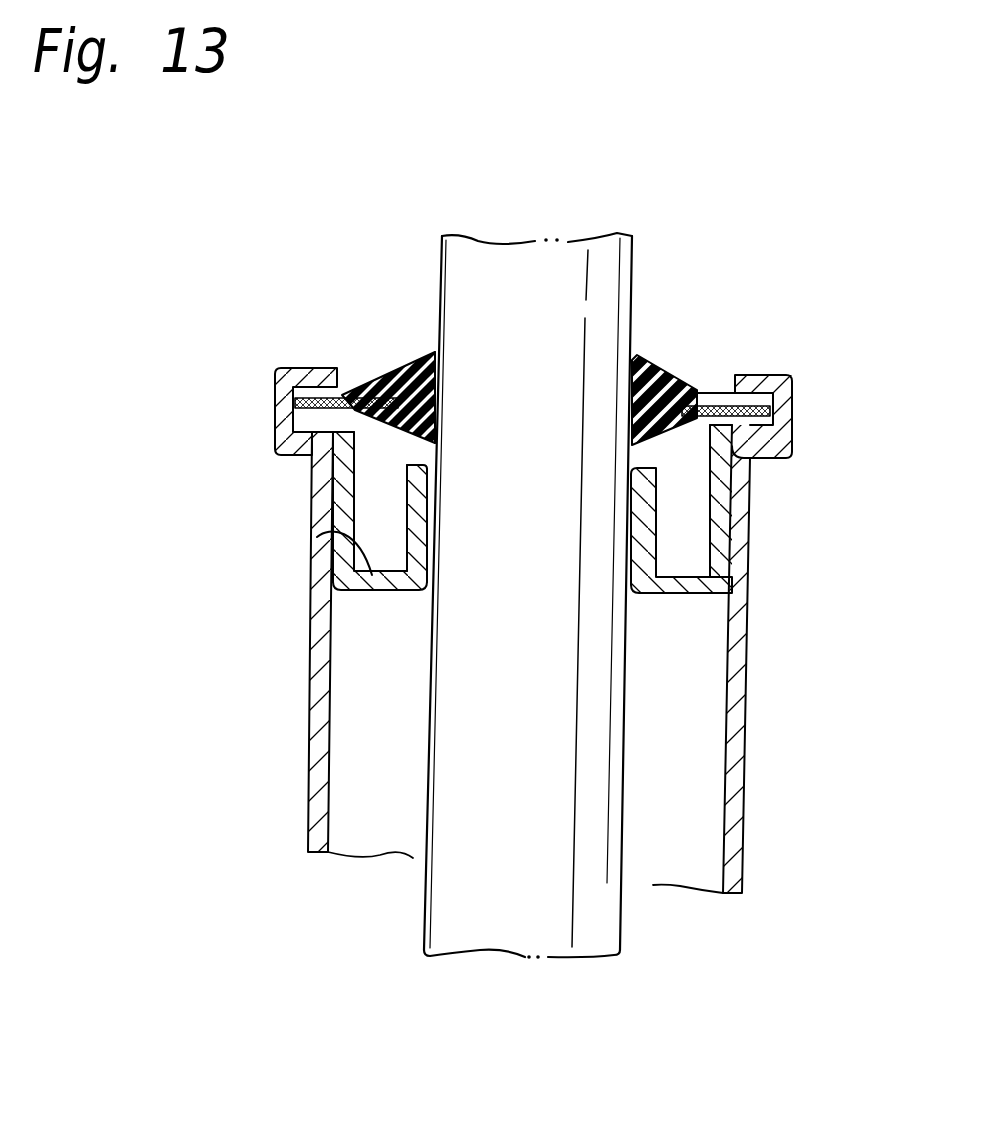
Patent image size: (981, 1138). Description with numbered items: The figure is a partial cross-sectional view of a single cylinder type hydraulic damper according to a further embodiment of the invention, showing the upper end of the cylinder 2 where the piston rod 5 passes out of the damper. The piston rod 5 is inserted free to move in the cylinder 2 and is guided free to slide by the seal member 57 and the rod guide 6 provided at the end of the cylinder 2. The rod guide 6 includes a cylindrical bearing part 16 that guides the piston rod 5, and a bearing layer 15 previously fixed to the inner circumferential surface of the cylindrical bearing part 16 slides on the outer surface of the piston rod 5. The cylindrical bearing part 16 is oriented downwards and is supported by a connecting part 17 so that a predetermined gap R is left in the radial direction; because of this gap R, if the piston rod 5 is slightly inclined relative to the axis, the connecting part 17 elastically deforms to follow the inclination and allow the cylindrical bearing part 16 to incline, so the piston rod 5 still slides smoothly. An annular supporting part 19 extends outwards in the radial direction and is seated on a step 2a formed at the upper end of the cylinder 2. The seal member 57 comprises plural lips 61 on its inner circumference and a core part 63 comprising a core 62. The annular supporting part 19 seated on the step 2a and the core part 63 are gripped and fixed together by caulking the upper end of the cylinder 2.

The piston rod 5 is at (553, 318).
The seal member 57 is at (493, 358).
The lips 61 is at (437, 412).
The core 62 is at (320, 406).
The core part 63 is at (300, 380).
The cylinder 2 is at (312, 630).
The step 2a is at (333, 460).
The rod guide 6 is at (495, 584).
The bearing layer 15 is at (443, 513).
The cylindrical bearing part 16 is at (418, 545).
The connecting part 17 is at (317, 537).
The annular supporting part 19 is at (343, 438).
The gap R is at (668, 528).